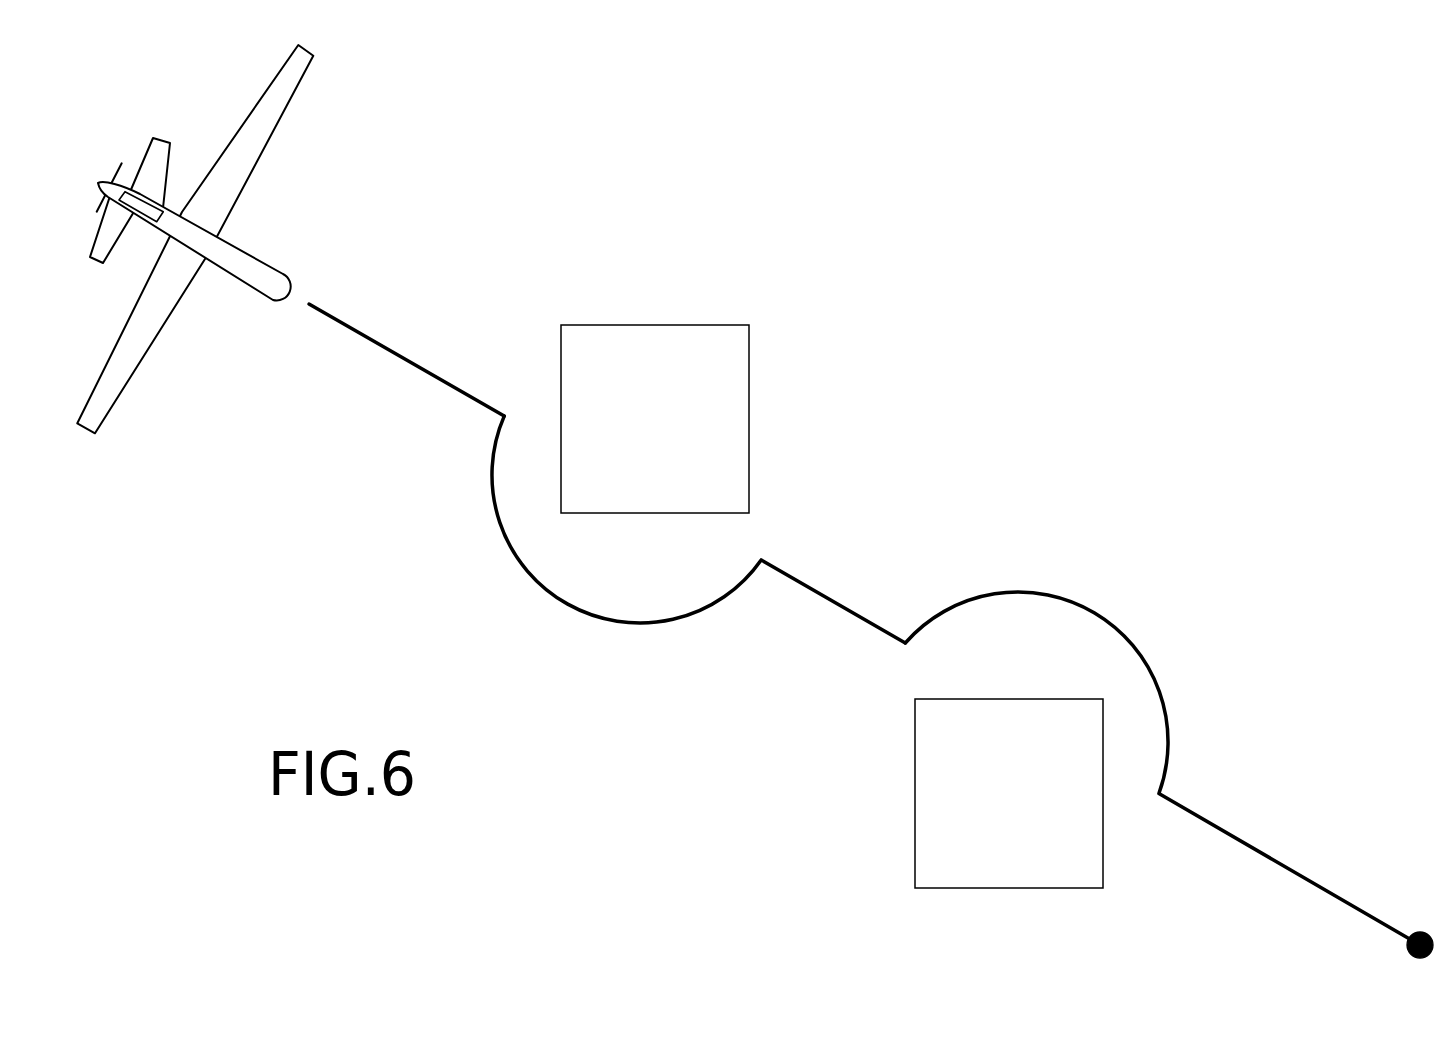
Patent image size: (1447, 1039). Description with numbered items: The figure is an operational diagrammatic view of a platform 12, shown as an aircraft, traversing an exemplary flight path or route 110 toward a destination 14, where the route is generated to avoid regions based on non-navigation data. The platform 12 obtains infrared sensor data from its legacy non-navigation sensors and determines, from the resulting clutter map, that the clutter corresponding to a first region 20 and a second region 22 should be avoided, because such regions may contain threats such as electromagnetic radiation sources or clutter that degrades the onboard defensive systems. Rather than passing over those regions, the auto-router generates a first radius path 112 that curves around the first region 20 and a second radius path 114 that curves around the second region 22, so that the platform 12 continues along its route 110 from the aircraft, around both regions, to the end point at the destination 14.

The platform 12 is at (230, 140).
The destination 14 is at (1427, 932).
The first region 20 is at (671, 430).
The second region 22 is at (1025, 802).
The route 110 is at (432, 371).
The first radius path 112 is at (637, 621).
The second radius path 114 is at (1025, 591).